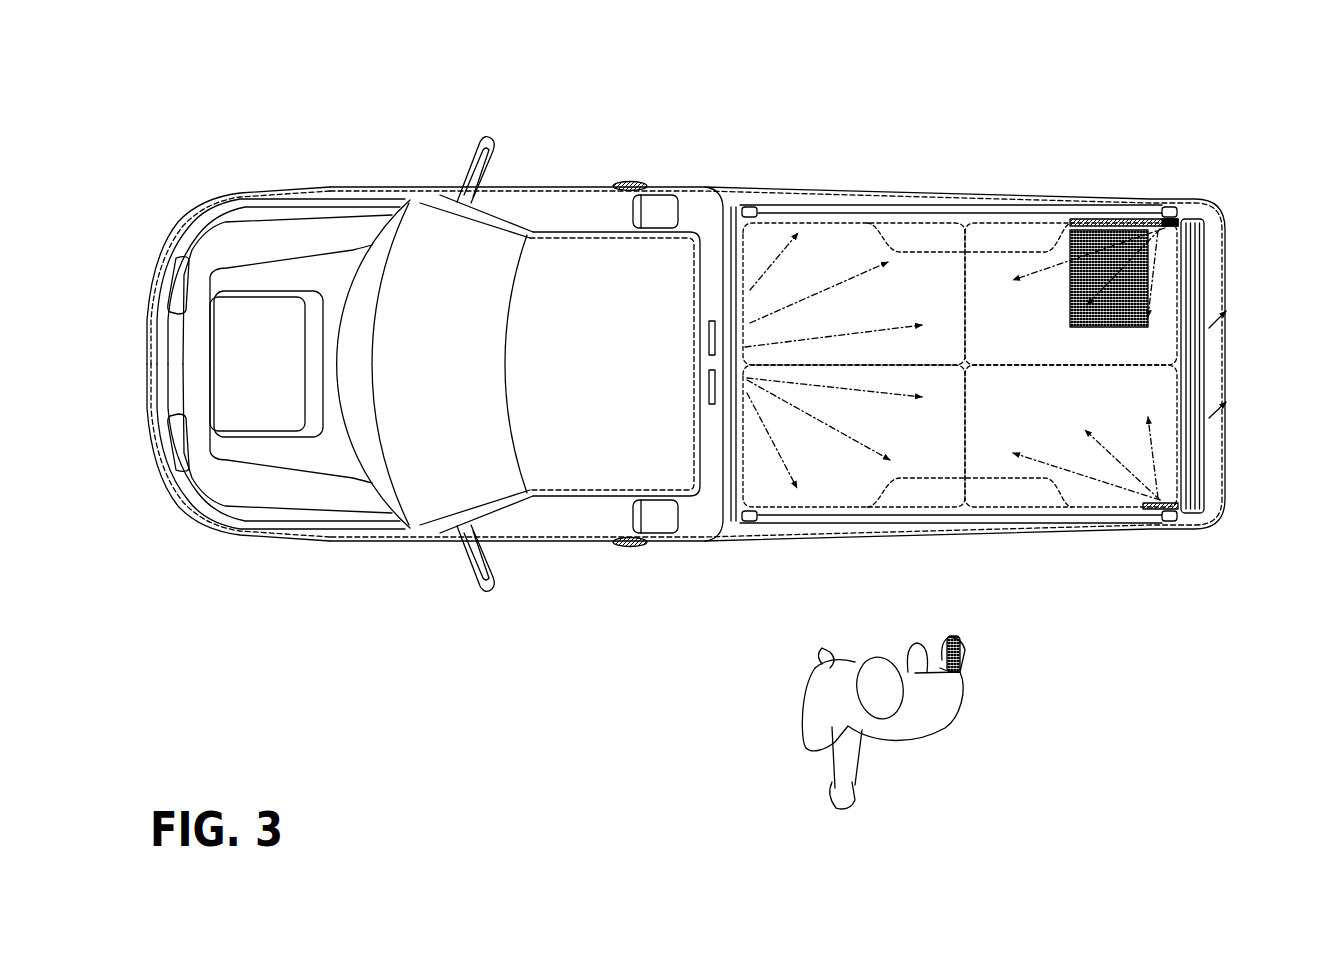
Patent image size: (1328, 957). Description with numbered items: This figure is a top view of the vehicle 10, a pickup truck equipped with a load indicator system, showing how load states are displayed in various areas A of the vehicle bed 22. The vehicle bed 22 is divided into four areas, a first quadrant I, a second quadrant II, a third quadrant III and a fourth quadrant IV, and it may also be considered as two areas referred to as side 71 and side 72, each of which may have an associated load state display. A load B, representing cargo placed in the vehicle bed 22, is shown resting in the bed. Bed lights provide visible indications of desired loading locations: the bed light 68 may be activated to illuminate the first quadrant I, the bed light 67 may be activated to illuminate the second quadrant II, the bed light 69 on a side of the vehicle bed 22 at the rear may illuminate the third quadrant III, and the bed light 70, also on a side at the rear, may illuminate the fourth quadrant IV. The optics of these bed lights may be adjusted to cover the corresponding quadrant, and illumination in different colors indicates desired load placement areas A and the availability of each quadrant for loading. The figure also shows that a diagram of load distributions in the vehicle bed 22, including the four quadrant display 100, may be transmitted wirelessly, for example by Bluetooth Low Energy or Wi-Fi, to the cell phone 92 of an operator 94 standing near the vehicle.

The vehicle 10 is at (333, 167).
The vehicle bed 22 is at (938, 283).
The bed light 67 is at (706, 385).
The bed light 68 is at (711, 330).
The bed light 69 is at (1168, 503).
The bed light 70 is at (1172, 226).
The side 71 is at (1043, 440).
The side 72 is at (1007, 282).
The cell phone 92 is at (953, 638).
The operator 94 is at (947, 720).
The four quadrant display 100 is at (1232, 203).
The areas A is at (873, 255).
The load B is at (1132, 320).
The first quadrant I is at (842, 262).
The second quadrant II is at (827, 470).
The third quadrant III is at (1080, 457).
The fourth quadrant IV is at (1023, 247).